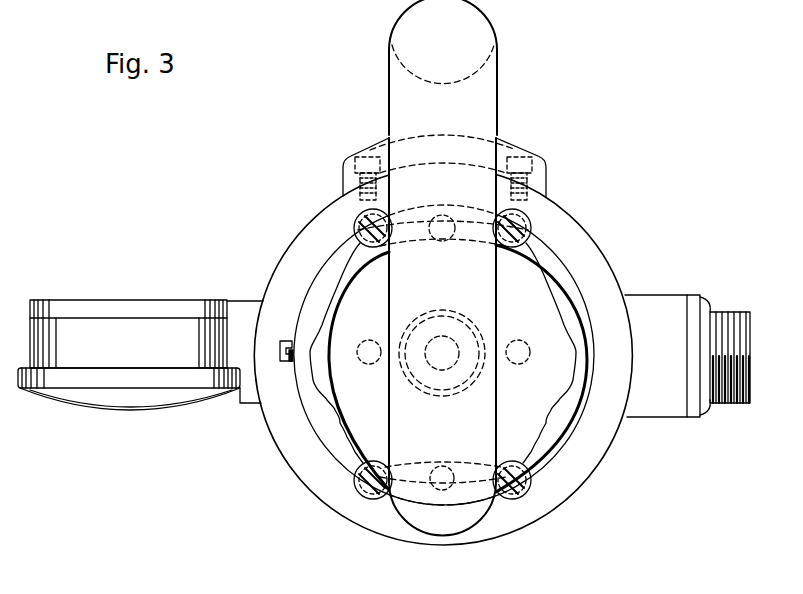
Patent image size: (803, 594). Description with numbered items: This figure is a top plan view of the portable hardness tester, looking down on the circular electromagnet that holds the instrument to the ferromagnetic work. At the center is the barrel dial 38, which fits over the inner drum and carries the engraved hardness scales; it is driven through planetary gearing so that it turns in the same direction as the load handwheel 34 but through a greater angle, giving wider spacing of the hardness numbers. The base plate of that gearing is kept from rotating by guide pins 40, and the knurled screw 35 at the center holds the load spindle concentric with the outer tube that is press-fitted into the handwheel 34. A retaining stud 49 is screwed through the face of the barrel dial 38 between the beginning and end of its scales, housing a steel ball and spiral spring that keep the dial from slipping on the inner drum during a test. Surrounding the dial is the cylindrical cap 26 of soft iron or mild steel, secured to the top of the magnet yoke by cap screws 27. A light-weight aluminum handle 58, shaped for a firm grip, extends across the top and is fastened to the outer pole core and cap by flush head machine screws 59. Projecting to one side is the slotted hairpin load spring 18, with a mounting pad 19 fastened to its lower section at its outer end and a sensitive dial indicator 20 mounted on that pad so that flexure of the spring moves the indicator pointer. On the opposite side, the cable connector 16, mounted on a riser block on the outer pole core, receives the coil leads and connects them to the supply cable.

The cable connector 16 is at (727, 405).
The load spring 18 is at (243, 405).
The mounting pad 19 is at (150, 306).
The dial indicator 20 is at (93, 412).
The cylindrical cap 26 is at (597, 248).
The cap screws 27 is at (529, 224).
The load handwheel 34 is at (568, 318).
The knurled screw 35 is at (434, 370).
The barrel dial 38 is at (588, 395).
The guide pins 40 is at (369, 364).
The retaining stud 49 is at (279, 362).
The handle 58 is at (455, 46).
The flush head machine screws 59 is at (365, 157).